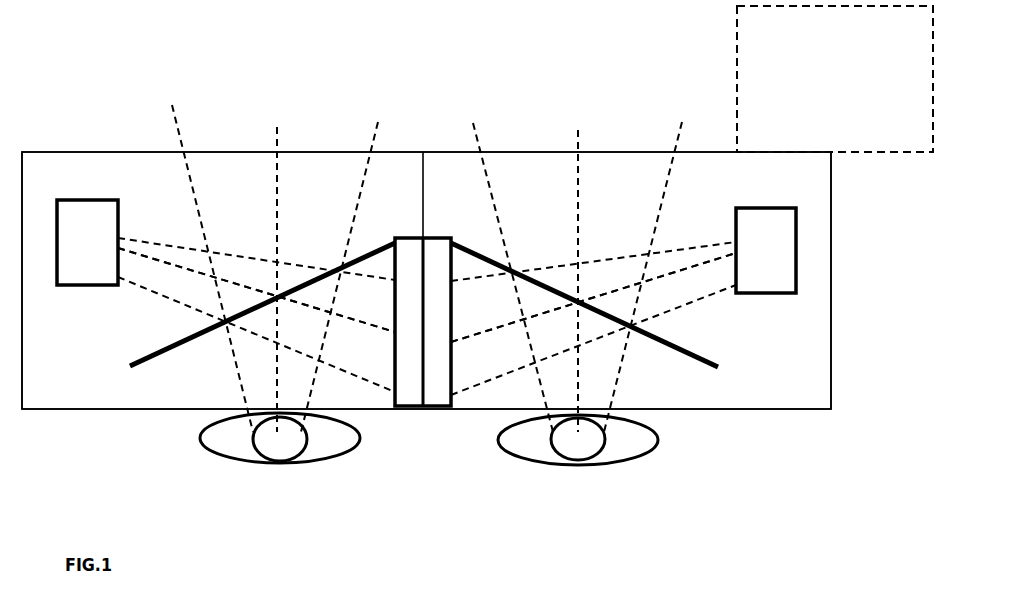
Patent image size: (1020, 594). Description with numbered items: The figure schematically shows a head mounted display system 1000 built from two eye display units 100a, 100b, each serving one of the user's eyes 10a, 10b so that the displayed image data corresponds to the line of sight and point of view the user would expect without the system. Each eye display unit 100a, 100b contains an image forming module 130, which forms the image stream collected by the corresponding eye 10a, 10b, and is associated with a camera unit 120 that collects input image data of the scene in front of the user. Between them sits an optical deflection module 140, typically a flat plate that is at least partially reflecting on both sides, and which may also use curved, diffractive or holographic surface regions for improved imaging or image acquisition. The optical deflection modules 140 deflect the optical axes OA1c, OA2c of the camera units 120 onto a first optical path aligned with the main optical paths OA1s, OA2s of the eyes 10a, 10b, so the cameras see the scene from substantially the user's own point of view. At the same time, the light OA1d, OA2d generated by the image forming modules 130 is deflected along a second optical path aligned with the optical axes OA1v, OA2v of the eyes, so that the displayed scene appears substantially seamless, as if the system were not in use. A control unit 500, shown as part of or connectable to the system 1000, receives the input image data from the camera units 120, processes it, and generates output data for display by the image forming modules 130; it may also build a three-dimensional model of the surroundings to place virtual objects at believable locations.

The display system 1000 is at (88, 126).
The eye display unit 100a is at (501, 129).
The eye display unit 100b is at (355, 134).
The camera unit 120 is at (87, 202).
The image forming module 130 is at (413, 238).
The optical deflection module 140 is at (752, 356).
The user's eye 10a is at (563, 447).
The user's eye 10b is at (280, 447).
The control unit 500 is at (835, 79).
The main optical path of user's eye OA1s is at (578, 190).
The main optical path of user's eye OA2s is at (277, 188).
The optical axis of camera unit OA1c is at (667, 278).
The optical axis of camera unit OA2c is at (158, 260).
The optical axis of user's eye OA1v is at (578, 380).
The optical axis of user's eye OA2v is at (277, 378).
The light generated by image forming module OA1d is at (488, 332).
The light generated by image forming module OA2d is at (365, 327).